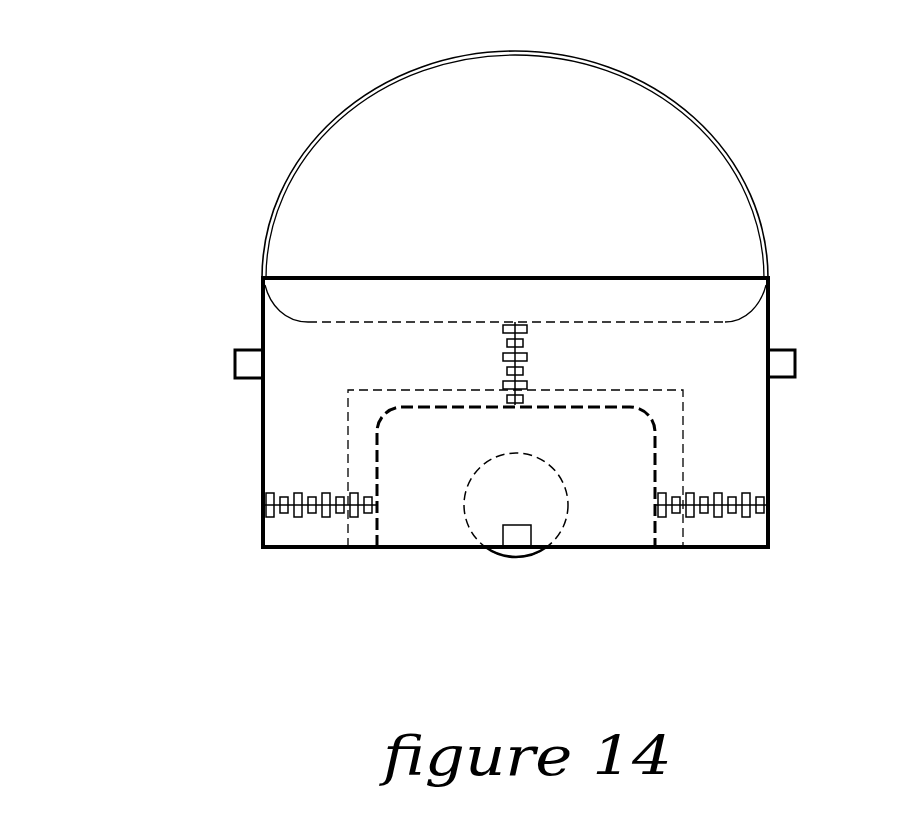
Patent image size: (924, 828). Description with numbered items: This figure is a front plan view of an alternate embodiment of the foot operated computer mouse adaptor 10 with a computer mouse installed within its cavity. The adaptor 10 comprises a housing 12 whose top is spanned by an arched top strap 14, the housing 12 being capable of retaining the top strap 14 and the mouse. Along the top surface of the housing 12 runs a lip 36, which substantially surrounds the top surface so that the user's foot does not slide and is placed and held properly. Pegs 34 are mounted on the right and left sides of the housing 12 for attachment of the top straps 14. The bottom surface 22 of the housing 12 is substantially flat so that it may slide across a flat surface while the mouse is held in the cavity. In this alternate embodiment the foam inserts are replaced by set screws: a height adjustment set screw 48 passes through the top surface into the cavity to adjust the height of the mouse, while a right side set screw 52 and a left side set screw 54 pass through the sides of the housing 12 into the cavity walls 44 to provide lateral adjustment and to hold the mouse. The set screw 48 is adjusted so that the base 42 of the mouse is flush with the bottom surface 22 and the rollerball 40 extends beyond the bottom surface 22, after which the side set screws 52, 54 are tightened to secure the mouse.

The foot operated computer mouse adaptor 10 is at (206, 238).
The housing 12 is at (768, 478).
The top straps 14 is at (731, 157).
The bottom surface 22 is at (722, 547).
The pegs 34 is at (235, 358).
The lip 36 is at (512, 278).
The rollerball 40 is at (511, 552).
The base 42 is at (450, 547).
The cavity walls 44 is at (348, 532).
The height adjustment set screw 48 is at (521, 350).
The right side set screw 52 is at (308, 493).
The left side set screw 54 is at (724, 493).